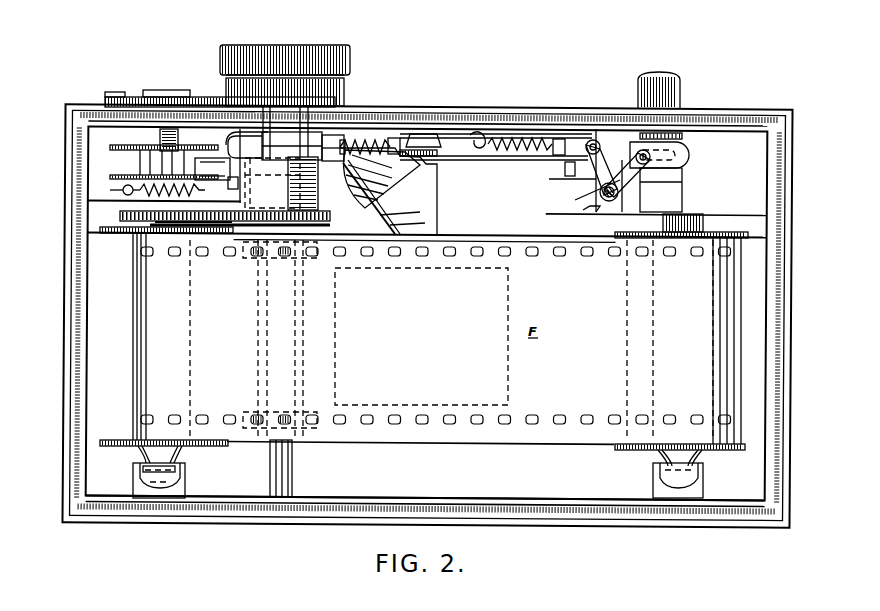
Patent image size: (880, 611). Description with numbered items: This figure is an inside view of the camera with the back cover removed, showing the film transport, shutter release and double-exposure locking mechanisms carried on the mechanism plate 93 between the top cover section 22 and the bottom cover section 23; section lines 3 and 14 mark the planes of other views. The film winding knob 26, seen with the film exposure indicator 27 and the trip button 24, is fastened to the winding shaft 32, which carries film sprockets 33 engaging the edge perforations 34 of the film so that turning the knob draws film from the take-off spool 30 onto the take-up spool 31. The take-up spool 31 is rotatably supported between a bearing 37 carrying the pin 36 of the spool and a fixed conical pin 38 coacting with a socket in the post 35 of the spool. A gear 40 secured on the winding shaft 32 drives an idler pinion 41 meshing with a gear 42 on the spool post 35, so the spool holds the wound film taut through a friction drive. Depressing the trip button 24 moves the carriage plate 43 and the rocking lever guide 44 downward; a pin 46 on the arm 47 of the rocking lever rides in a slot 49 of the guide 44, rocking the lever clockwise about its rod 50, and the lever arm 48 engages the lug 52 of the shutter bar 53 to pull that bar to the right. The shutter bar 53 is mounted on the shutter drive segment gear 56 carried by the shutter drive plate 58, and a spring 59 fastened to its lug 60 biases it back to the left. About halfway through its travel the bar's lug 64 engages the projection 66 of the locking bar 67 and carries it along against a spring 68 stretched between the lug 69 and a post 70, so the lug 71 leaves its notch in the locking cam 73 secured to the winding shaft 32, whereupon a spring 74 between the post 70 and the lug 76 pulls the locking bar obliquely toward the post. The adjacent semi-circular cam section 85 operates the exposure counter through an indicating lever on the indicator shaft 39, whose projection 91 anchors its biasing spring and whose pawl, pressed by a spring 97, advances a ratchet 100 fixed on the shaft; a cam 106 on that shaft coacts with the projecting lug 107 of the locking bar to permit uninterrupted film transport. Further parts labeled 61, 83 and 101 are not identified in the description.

The section line 3- 3 is at (80, 125).
The section line 14 is at (137, 140).
The top cover section 22 is at (556, 116).
The bottom cover section 23 is at (547, 504).
The trip button 24 is at (681, 90).
The film winding knob 26 is at (348, 60).
The film exposure indicator 27 is at (120, 102).
The take-off spool 30 is at (632, 448).
The take-up spool 31 is at (218, 447).
The winding shaft 32 is at (312, 118).
The film sprockets 33 is at (300, 258).
The edge perforations 34 is at (388, 256).
The spool post 35 is at (135, 232).
The pin of the spool 36 is at (186, 476).
The bearing 37 is at (140, 472).
The fixed conical pin 38 is at (150, 228).
The indicator shaft 39 is at (160, 137).
The gear 40 is at (335, 224).
The idler pinion 41 is at (228, 224).
The gear 42 is at (122, 216).
The carriage plate 43 is at (683, 136).
The rocking lever guide 44 is at (689, 153).
The pin 46 is at (682, 172).
The arm of rocking lever 47 is at (628, 178).
The lever arm 48 is at (588, 194).
The slot 49 is at (688, 160).
The rod 50 is at (592, 210).
The lug 52 is at (598, 143).
The shutter bar 53 is at (500, 160).
The shutter drive segment gear 56 is at (436, 156).
The shutter drive plate 58 is at (452, 134).
The spring 59 is at (500, 138).
The lug 60 is at (565, 146).
The shutter housing 61 is at (437, 208).
The lug 64 is at (565, 168).
The projection 66 is at (580, 180).
The locking bar 67 is at (245, 147).
The spring 68 is at (366, 140).
The lug 69 is at (396, 138).
The post 70 is at (342, 140).
The lug 71 is at (310, 142).
The locking cam 73 is at (272, 183).
The spring 74 is at (330, 158).
The lug 76 is at (382, 179).
The pin 83 is at (235, 178).
The semi-circular cam section 85 is at (295, 183).
The projection 91 is at (118, 189).
The mechanism plate 93 is at (584, 213).
The spring 97 is at (158, 184).
The ratchet 100 is at (128, 160).
The lever 101 is at (230, 168).
The cam 106 is at (126, 150).
The projecting lug 107 is at (247, 134).